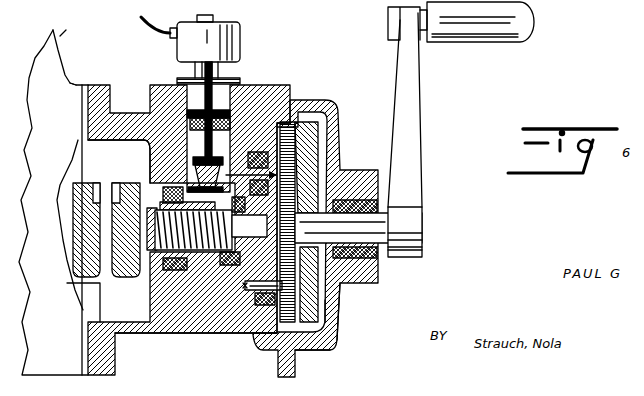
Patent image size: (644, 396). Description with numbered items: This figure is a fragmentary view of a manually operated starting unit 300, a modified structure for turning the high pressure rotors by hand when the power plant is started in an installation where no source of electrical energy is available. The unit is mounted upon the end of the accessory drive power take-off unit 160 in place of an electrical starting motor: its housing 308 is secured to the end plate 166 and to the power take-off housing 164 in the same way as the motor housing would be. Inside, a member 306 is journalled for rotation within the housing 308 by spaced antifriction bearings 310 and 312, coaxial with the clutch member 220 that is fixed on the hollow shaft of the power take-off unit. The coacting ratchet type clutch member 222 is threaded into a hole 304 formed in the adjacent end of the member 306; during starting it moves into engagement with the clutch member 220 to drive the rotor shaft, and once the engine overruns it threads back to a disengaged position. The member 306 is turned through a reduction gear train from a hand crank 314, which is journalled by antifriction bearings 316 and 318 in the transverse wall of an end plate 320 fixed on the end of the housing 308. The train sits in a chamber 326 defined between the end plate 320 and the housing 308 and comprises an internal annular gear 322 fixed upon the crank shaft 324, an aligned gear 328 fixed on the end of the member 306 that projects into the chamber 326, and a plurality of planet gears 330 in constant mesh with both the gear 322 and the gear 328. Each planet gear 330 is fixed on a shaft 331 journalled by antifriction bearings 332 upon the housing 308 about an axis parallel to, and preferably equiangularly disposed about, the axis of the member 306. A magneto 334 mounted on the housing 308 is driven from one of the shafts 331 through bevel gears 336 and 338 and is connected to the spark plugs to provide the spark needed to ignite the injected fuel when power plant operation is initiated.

The accessory drive power take-off unit 160 is at (74, 25).
The housing 164 is at (58, 38).
The end plate 166 is at (85, 80).
The clutch member 220 is at (80, 165).
The clutch member 222 is at (115, 282).
The manually operated starting unit 300 is at (276, 73).
The hole 304 is at (191, 266).
The member 306 is at (160, 268).
The housing 308 is at (163, 332).
The antifriction bearing 310 is at (248, 278).
The antifriction bearing 312 is at (165, 283).
The hand crank 314 is at (418, 68).
The antifriction bearing 316 is at (346, 297).
The antifriction bearing 318 is at (379, 272).
The end plate 320 is at (346, 313).
The internal annular gear 322 is at (293, 123).
The shaft 324 is at (382, 223).
The chamber 326 is at (346, 328).
The gear 328 is at (207, 229).
The planet gear 330 is at (292, 157).
The shaft 331 is at (300, 176).
The antifriction bearing 332 is at (268, 142).
The magneto 334 is at (238, 27).
The bevel gear 336 is at (157, 156).
The bevel gear 338 is at (213, 175).